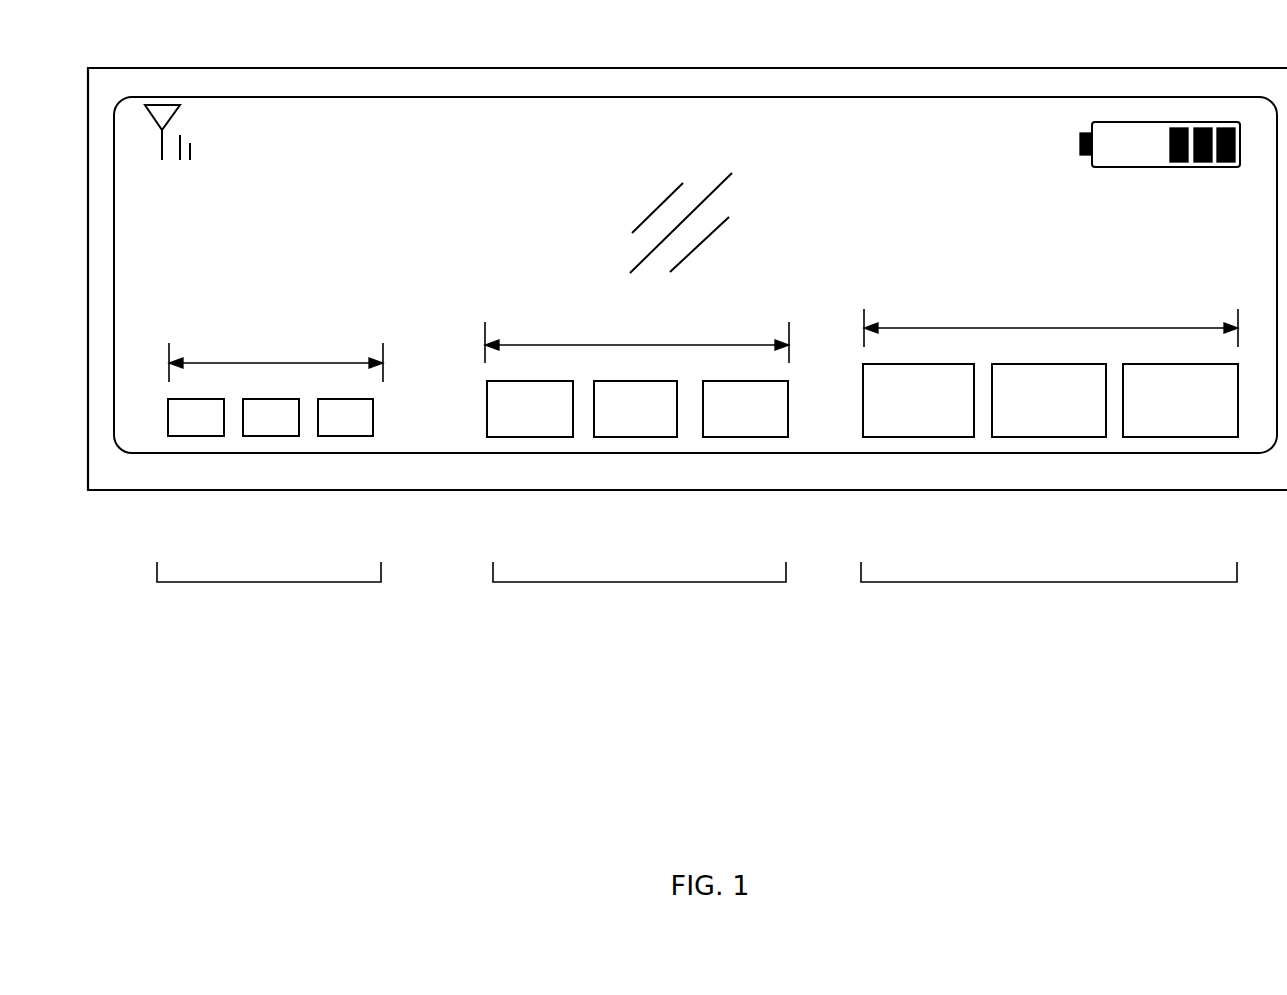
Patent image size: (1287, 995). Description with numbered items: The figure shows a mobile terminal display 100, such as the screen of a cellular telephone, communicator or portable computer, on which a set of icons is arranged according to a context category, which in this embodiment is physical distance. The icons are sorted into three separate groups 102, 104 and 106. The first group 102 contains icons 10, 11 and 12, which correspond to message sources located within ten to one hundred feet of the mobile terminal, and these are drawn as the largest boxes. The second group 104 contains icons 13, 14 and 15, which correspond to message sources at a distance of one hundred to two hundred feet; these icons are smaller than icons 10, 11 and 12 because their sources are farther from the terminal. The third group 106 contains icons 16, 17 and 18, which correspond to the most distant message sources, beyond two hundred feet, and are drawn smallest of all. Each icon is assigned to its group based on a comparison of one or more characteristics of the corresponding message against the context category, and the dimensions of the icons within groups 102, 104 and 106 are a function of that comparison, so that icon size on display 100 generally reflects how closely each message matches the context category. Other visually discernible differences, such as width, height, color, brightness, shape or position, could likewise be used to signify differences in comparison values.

The mobile terminal display 100 is at (480, 150).
The icon 10 is at (1168, 410).
The icon 11 is at (1037, 410).
The icon 12 is at (906, 410).
The icon 13 is at (734, 418).
The icon 14 is at (624, 418).
The icon 15 is at (518, 418).
The icon 16 is at (334, 427).
The icon 17 is at (260, 427).
The icon 18 is at (185, 427).
The group 102 is at (1047, 582).
The group 104 is at (638, 582).
The group 106 is at (268, 582).